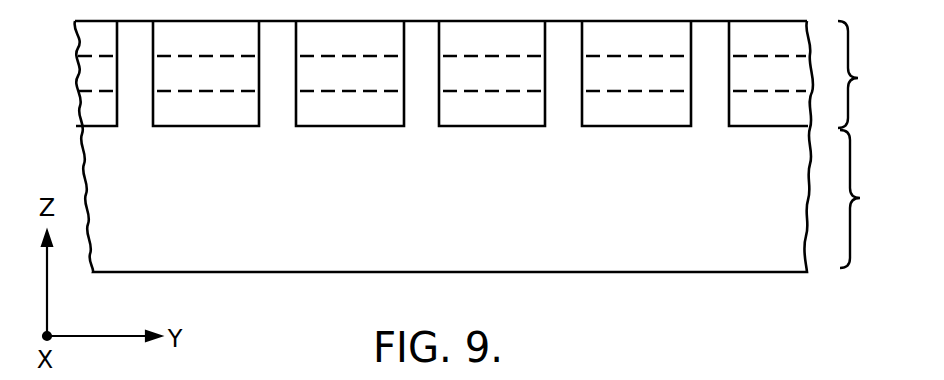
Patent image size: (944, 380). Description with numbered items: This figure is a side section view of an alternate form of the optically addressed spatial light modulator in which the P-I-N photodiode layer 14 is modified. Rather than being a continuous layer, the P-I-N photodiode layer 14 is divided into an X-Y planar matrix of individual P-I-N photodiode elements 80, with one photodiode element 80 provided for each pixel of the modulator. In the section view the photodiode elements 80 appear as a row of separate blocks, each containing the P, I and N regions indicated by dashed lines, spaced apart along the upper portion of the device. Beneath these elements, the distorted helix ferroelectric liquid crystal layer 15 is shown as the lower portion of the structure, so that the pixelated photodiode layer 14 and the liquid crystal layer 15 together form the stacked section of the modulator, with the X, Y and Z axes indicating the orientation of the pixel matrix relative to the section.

The P-I-N photodiode layer 14 is at (489, 115).
The distorted helix ferroelectric liquid crystal layer 15 is at (495, 146).
The P-I-N photodiode elements 80 is at (383, 112).